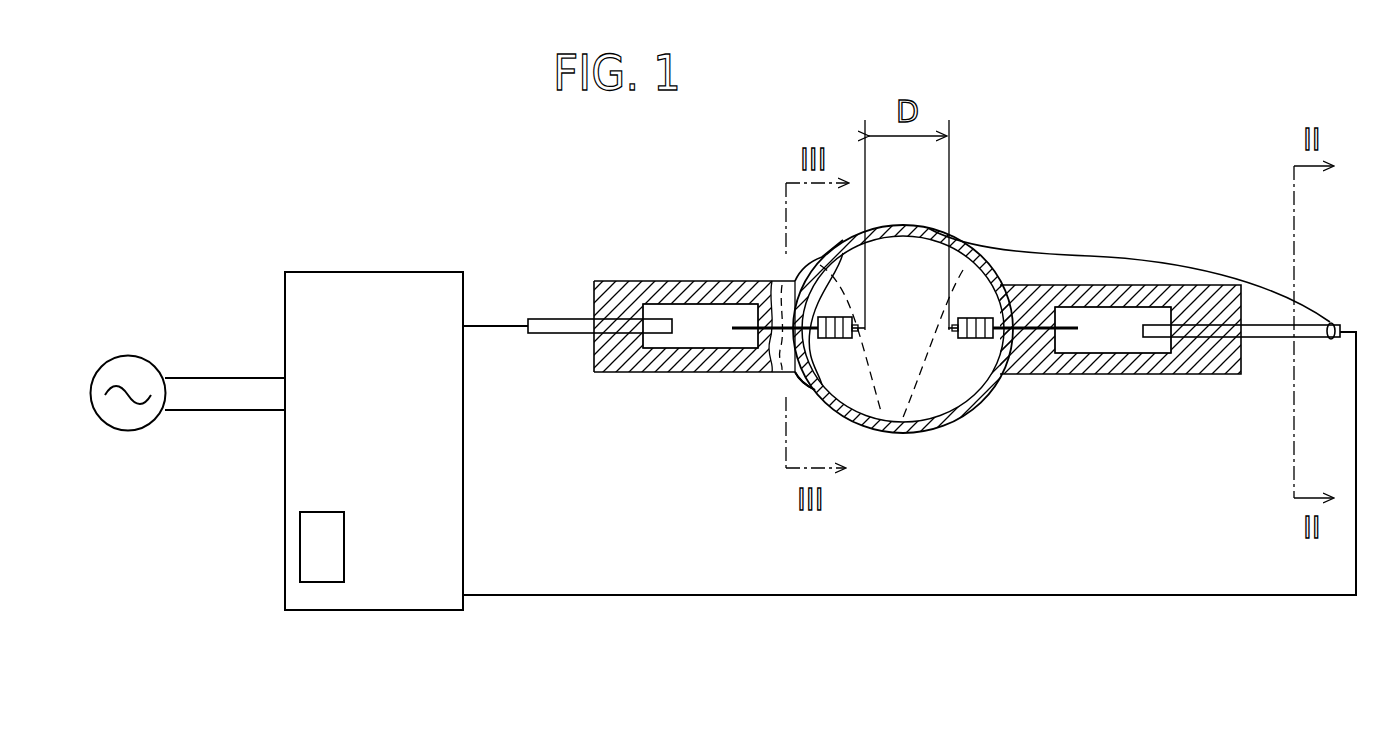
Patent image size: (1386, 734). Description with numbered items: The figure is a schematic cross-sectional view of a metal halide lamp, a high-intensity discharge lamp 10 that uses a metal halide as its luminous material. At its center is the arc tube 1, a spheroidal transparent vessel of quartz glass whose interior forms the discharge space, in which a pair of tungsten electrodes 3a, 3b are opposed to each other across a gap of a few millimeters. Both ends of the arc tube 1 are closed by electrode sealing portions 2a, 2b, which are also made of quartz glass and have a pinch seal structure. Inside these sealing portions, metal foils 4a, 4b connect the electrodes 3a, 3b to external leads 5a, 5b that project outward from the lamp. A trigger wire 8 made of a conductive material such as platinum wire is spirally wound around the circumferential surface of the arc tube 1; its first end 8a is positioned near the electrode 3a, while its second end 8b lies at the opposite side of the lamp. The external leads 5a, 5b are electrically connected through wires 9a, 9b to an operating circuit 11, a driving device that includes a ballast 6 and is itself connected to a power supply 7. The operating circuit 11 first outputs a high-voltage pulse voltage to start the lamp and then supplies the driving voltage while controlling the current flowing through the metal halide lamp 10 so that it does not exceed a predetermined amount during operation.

The arc tube 1 is at (952, 417).
The electrode sealing portion 2a is at (593, 360).
The electrode sealing portion 2b is at (1207, 367).
The electrode 3a is at (740, 322).
The electrode 3b is at (1035, 328).
The metal foil 4a is at (697, 318).
The metal foil 4b is at (1108, 343).
The external lead 5a is at (555, 318).
The external lead 5b is at (1278, 338).
The ballast 6 is at (323, 574).
The power supply 7 is at (157, 418).
The trigger wire 8 is at (1165, 258).
The first end of trigger wire 8a is at (798, 380).
The second end of trigger wire 8b is at (1330, 315).
The wire 9a is at (490, 323).
The wire 9b is at (1327, 595).
The high-intensity discharge lamp 10 is at (1022, 162).
The operating circuit 11 is at (412, 610).